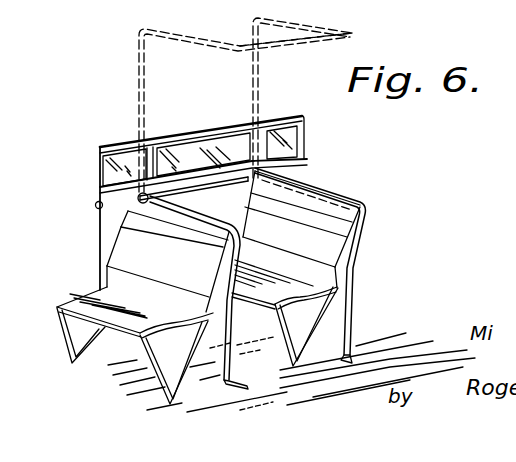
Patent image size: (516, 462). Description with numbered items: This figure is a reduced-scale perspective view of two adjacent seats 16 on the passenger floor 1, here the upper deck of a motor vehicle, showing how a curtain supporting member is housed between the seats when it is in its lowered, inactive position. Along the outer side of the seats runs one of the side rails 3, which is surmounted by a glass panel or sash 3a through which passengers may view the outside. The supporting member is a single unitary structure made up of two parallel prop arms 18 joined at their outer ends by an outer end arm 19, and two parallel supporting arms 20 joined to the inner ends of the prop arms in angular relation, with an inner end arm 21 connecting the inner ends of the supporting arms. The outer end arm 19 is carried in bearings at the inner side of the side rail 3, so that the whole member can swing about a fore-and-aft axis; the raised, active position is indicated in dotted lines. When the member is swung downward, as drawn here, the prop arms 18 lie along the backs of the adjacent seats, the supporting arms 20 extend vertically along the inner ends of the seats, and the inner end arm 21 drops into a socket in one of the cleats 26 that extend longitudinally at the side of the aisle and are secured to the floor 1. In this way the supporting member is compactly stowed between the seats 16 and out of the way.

The passenger floor 1 is at (428, 350).
The side rails 3 is at (95, 206).
The glass panels or sashes 3a is at (208, 131).
The seat 16 is at (362, 316).
The prop arms 18 is at (138, 100).
The outer end arm 19 is at (224, 176).
The supporting arms 20 is at (252, 29).
The inner end arm 21 is at (322, 42).
The cleats 26 is at (293, 370).